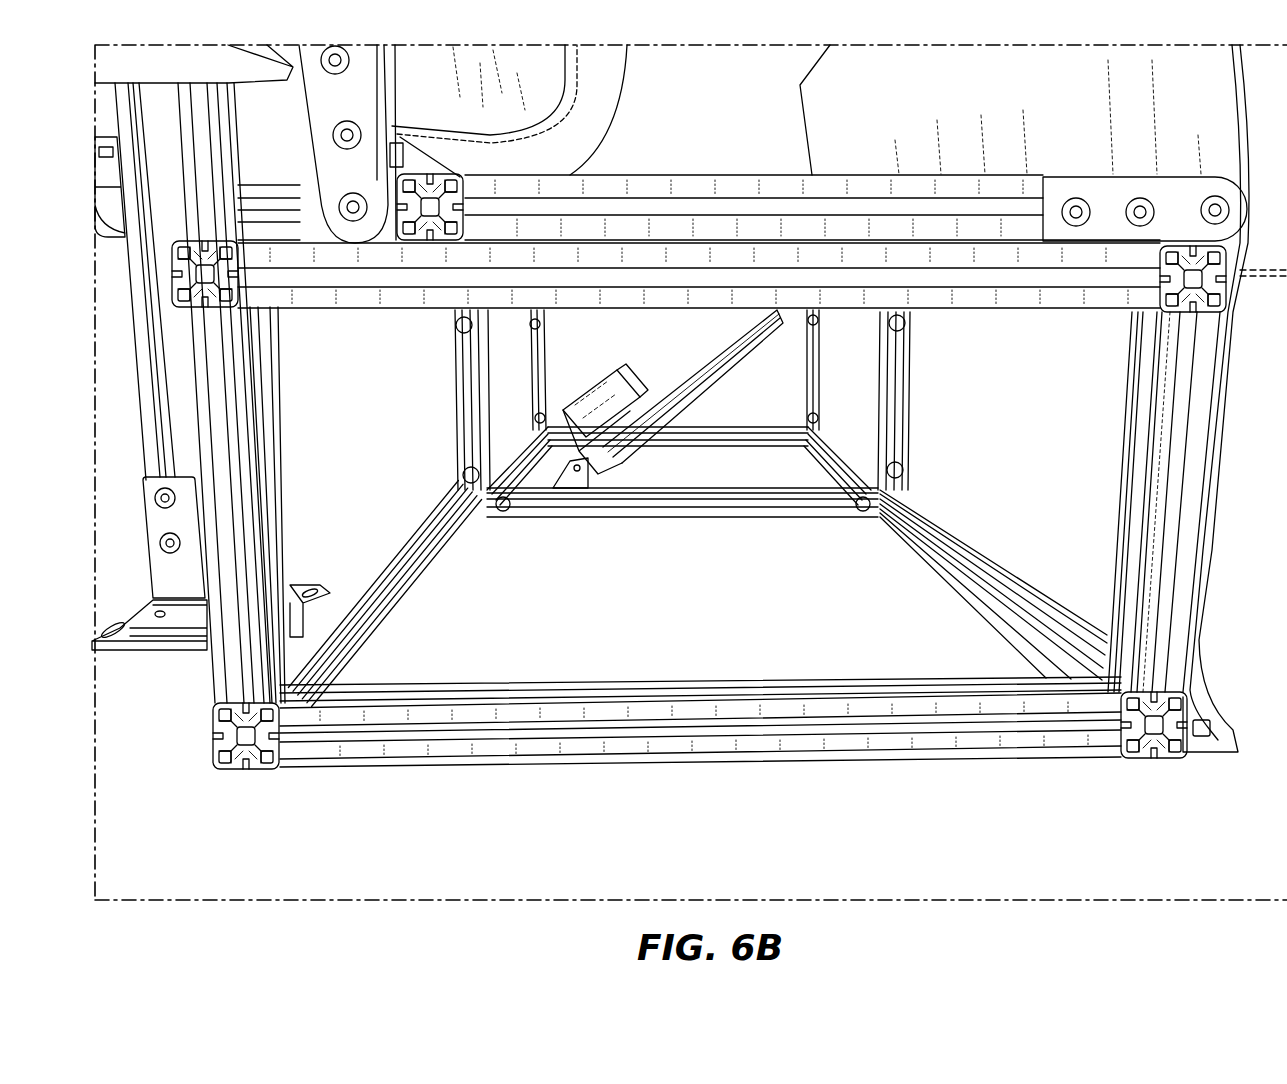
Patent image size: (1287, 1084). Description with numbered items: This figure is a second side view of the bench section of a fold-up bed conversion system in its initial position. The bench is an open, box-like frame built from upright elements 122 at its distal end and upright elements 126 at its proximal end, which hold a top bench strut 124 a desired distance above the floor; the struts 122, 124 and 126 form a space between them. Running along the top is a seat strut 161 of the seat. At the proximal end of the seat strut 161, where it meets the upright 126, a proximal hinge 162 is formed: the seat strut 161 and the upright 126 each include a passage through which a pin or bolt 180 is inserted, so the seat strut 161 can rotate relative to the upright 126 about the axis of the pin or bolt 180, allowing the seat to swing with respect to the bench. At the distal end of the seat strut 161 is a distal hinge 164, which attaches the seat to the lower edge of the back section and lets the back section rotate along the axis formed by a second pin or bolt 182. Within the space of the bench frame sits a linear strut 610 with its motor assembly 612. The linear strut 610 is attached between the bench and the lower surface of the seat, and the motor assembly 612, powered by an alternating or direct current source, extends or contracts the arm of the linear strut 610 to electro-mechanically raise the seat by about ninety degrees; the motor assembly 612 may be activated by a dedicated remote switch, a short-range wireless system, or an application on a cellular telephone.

The upright element 122 is at (242, 465).
The top bench strut 124 is at (697, 300).
The upright element 126 is at (1160, 443).
The seat strut 161 is at (892, 212).
The proximal hinge 162 is at (1097, 187).
The distal hinge 164 is at (362, 232).
The pin or bolt 180 is at (1217, 197).
The pin or bolt 182 is at (353, 215).
The linear strut 610 is at (670, 392).
The motor assembly 612 is at (600, 405).